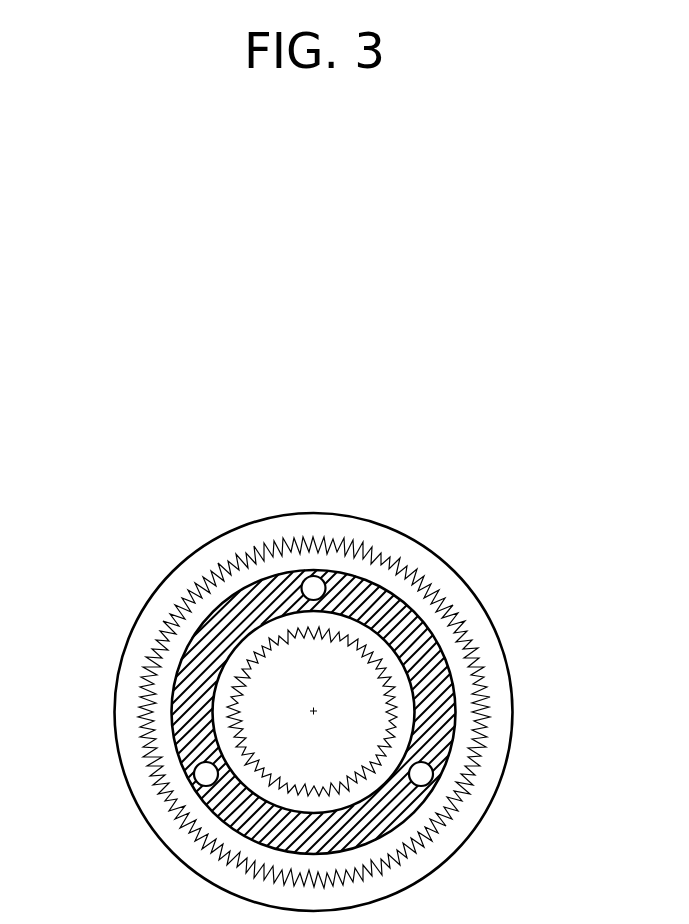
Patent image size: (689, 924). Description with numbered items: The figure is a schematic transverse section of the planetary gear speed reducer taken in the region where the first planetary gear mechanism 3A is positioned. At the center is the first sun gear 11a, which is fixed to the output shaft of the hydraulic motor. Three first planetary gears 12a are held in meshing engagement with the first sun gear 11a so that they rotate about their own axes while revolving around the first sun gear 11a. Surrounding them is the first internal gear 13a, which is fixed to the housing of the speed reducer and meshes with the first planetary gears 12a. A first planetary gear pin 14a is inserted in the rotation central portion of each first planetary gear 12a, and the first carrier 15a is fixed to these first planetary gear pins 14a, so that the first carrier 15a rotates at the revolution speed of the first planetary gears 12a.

The first planetary gear mechanism 3A is at (149, 565).
The first sun gear 11a is at (350, 693).
The first planetary gears 12a is at (176, 786).
The first internal gear 13a is at (137, 648).
The first planetary gear pins 14a is at (436, 781).
The first carrier 15a is at (407, 616).